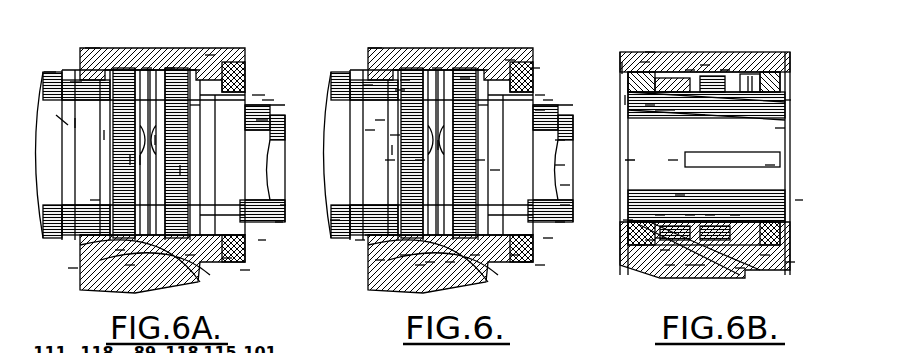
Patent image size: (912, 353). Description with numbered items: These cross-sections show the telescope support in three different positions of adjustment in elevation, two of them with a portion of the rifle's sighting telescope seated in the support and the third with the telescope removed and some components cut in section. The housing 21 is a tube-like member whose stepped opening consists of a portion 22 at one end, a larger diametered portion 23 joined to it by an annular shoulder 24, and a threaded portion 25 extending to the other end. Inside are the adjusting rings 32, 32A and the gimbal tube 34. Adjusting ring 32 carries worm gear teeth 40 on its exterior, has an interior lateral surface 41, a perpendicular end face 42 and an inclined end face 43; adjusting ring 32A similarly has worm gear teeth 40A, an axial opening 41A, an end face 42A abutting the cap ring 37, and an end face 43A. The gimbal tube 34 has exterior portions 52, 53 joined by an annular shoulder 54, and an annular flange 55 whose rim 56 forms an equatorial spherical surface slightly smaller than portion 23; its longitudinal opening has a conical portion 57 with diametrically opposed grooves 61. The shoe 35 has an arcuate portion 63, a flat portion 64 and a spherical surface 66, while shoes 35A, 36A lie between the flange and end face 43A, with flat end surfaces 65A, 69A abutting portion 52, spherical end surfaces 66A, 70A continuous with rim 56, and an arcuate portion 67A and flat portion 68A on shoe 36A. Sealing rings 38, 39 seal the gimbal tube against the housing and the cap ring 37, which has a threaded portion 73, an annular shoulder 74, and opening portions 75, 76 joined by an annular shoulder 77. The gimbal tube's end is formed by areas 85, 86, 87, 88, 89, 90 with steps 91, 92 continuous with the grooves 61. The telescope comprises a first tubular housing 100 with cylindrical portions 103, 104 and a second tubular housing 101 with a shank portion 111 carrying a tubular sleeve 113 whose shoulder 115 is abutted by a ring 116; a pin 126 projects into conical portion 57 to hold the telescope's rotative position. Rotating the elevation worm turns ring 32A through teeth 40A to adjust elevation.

In FIG. 6A, the housing 21 is at (97, 42).
In FIG. 6, the housing 21 is at (360, 44).
In FIG. 6B, the housing 21 is at (616, 71).
In FIG. 6, the opening portion 22 is at (368, 84).
In FIG. 6, the larger diametered portion 23 is at (400, 90).
In FIG. 6, the annular shoulder 24 is at (405, 80).
In FIG. 6, the threaded portion 25 is at (510, 60).
In FIG. 6A, the adjusting ring 32 is at (100, 139).
In FIG. 6, the adjusting ring 32 is at (388, 154).
In FIG. 6B, the adjusting ring 32 is at (650, 241).
In FIG. 6A, the adjusting ring 32A is at (245, 272).
In FIG. 6, the adjusting ring 32A is at (560, 165).
In FIG. 6B, the adjusting ring 32A is at (725, 69).
In FIG. 6A, the gimbal tube 34 is at (72, 127).
In FIG. 6, the gimbal tube 34 is at (380, 120).
In FIG. 6B, the gimbal tube 34 is at (620, 104).
In FIG. 6A, the shoe 35 is at (166, 144).
In FIG. 6, the shoe 35 is at (448, 149).
In FIG. 6A, the shoe 35A is at (170, 67).
In FIG. 6, the shoe 35A is at (455, 69).
In FIG. 6B, the shoe 35A is at (705, 64).
In FIG. 6A, the shoe 36A is at (130, 265).
In FIG. 6, the shoe 36A is at (420, 267).
In FIG. 6B, the shoe 36A is at (670, 266).
In FIG. 6A, the cap ring 37 is at (232, 267).
In FIG. 6, the cap ring 37 is at (540, 267).
In FIG. 6B, the cap ring 37 is at (740, 270).
In FIG. 6, the sealing ring 38 is at (370, 237).
In FIG. 6, the sealing ring 39 is at (535, 67).
In FIG. 6, the worm gear teeth 40 is at (380, 262).
In FIG. 6B, the worm gear teeth 40 is at (645, 52).
In FIG. 6, the worm gear teeth 40A is at (465, 77).
In FIG. 6B, the interior lateral surface 41 is at (650, 106).
In FIG. 6B, the axial opening 41A is at (735, 215).
In FIG. 6A, the end face 42 is at (135, 160).
In FIG. 6, the end face 42 is at (420, 161).
In FIG. 6B, the end face 42 is at (640, 246).
In FIG. 6A, the end face 42A is at (190, 258).
In FIG. 6, the end face 42A is at (475, 258).
In FIG. 6B, the end face 42A is at (700, 267).
In FIG. 6A, the end face 43 is at (150, 69).
In FIG. 6, the end face 43 is at (398, 68).
In FIG. 6B, the end face 43 is at (660, 111).
In FIG. 6A, the end face 43A is at (95, 200).
In FIG. 6, the end face 43A is at (395, 135).
In FIG. 6B, the end face 43A is at (680, 195).
In FIG. 6A, the portion 52 is at (62, 120).
In FIG. 6, the portion 52 is at (368, 122).
In FIG. 6B, the portion 52 is at (660, 240).
In FIG. 6, the portion 53 is at (515, 257).
In FIG. 6B, the portion 53 is at (769, 263).
In FIG. 6A, the annular shoulder 54 is at (185, 170).
In FIG. 6, the annular shoulder 54 is at (495, 171).
In FIG. 6A, the annular flange 55 is at (147, 67).
In FIG. 6, the annular flange 55 is at (437, 67).
In FIG. 6B, the annular flange 55 is at (665, 252).
In FIG. 6A, the rim 56 is at (120, 252).
In FIG. 6, the rim 56 is at (405, 257).
In FIG. 6B, the rim 56 is at (650, 51).
In FIG. 6B, the conical portion 57 is at (628, 221).
In FIG. 6B, the grooves 61 is at (690, 215).
In FIG. 6A, the arcuate portion 63 is at (72, 270).
In FIG. 6, the arcuate portion 63 is at (360, 242).
In FIG. 6A, the flat portion 64 is at (95, 236).
In FIG. 6, the flat portion 64 is at (390, 160).
In FIG. 6B, the flat end surface 65A is at (670, 111).
In FIG. 6A, the spherical surface 66 is at (145, 160).
In FIG. 6, the spherical surface 66 is at (480, 160).
In FIG. 6B, the spherical end surface 66A is at (690, 69).
In FIG. 6B, the arcuate portion 67A is at (660, 215).
In FIG. 6B, the flat portion 68A is at (710, 215).
In FIG. 6B, the flat end surface 69A is at (672, 160).
In FIG. 6B, the spherical end surface 70A is at (690, 266).
In FIG. 6, the threaded portion 73 is at (430, 264).
In FIG. 6, the annular shoulder 74 is at (450, 264).
In FIG. 6A, the opening portion 75 is at (195, 106).
In FIG. 6, the opening portion 75 is at (483, 106).
In FIG. 6A, the opening portion 76 is at (258, 94).
In FIG. 6, the opening portion 76 is at (540, 110).
In FIG. 6A, the annular shoulder 77 is at (210, 55).
In FIG. 6, the annular shoulder 77 is at (525, 264).
In FIG. 6, the area 85 is at (540, 94).
In FIG. 6B, the area 85 is at (780, 128).
In FIG. 6, the area 86 is at (571, 211).
In FIG. 6, the area 87 is at (560, 140).
In FIG. 6B, the area 88 is at (800, 200).
In FIG. 6B, the area 89 is at (790, 100).
In FIG. 6B, the area 90 is at (790, 263).
In FIG. 6, the step 91 is at (565, 186).
In FIG. 6B, the step 92 is at (770, 165).
In FIG. 6, the first tubular housing 100 is at (337, 230).
In FIG. 6A, the second tubular housing 101 is at (283, 206).
In FIG. 6, the second tubular housing 101 is at (560, 223).
In FIG. 6A, the cylindrical portion 103 is at (50, 71).
In FIG. 6A, the cylindrical portion 104 is at (76, 80).
In FIG. 6A, the shank portion 111 is at (278, 223).
In FIG. 6A, the tubular sleeve 113 is at (266, 248).
In FIG. 6, the tubular sleeve 113 is at (555, 239).
In FIG. 6A, the shoulder 115 is at (262, 119).
In FIG. 6A, the ring 116 is at (268, 99).
In FIG. 6, the ring 116 is at (548, 99).
In FIG. 6B, the pin 126 is at (700, 116).